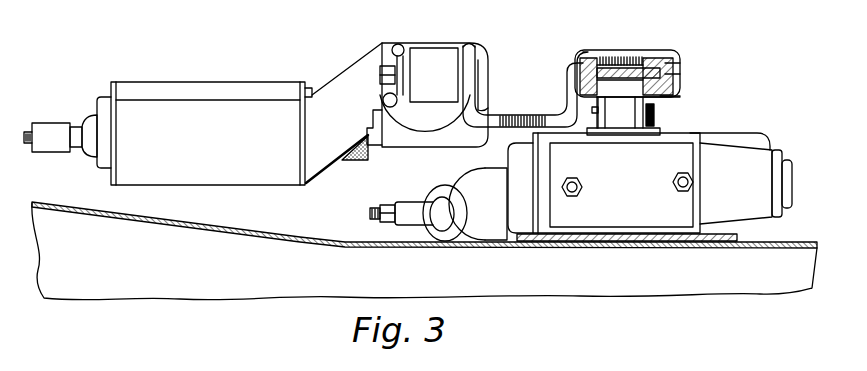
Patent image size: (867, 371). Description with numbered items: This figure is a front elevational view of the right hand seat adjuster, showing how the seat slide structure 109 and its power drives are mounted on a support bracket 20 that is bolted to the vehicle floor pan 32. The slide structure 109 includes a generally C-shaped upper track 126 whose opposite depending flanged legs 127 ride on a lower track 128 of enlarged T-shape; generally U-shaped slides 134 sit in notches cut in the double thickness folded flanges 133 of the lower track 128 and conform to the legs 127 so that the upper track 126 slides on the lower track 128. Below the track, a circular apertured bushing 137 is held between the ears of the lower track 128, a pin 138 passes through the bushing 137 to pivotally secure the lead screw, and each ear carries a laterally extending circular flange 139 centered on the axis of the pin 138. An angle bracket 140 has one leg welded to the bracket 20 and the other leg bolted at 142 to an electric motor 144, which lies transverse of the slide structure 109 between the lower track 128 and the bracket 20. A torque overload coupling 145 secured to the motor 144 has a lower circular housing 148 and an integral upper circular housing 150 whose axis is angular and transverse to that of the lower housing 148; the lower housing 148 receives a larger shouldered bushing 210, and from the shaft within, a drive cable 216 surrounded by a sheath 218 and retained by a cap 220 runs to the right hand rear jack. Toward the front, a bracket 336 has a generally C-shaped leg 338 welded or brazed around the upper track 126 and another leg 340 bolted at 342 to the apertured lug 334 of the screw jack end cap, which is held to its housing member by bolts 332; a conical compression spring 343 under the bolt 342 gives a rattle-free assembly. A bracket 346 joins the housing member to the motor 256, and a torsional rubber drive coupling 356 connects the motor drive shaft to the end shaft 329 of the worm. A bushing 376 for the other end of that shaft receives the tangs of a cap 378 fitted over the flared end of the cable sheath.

The support bracket 20 is at (695, 233).
The vehicle floor pan 32 is at (790, 242).
The seat slide structure 109 is at (680, 96).
The upper track 126 is at (626, 58).
The depending flanged legs 127 is at (672, 74).
The lower track 128 is at (645, 62).
The folded flanges 133 is at (596, 58).
The slide 134 is at (676, 63).
The bushing 137 is at (617, 118).
The pin 138 is at (654, 110).
The circular flange 139 is at (590, 132).
The angle bracket 140 is at (627, 215).
The bolts 142 is at (575, 196).
The electric motor 144 is at (752, 136).
The torque overload coupling 145 is at (437, 186).
The lower circular housing 148 is at (478, 230).
The upper circular housing 150 is at (490, 180).
The shouldered bushing 210 is at (440, 230).
The drive cable 216 is at (370, 213).
The sheath 218 is at (398, 218).
The cap 220 is at (423, 218).
The motor 256 is at (215, 80).
The end shaft 329 is at (377, 142).
The bolts 332 is at (396, 48).
The apertured lug 334 is at (440, 55).
The bracket 336 is at (530, 113).
The C-shaped leg 338 is at (605, 57).
The other leg 340 is at (470, 110).
The bolt 342 is at (478, 70).
The conical compression spring 343 is at (405, 70).
The bracket 346 is at (322, 88).
The torsional rubber drive coupling 356 is at (347, 162).
The bushing 376 is at (78, 127).
The cap 378 is at (55, 122).